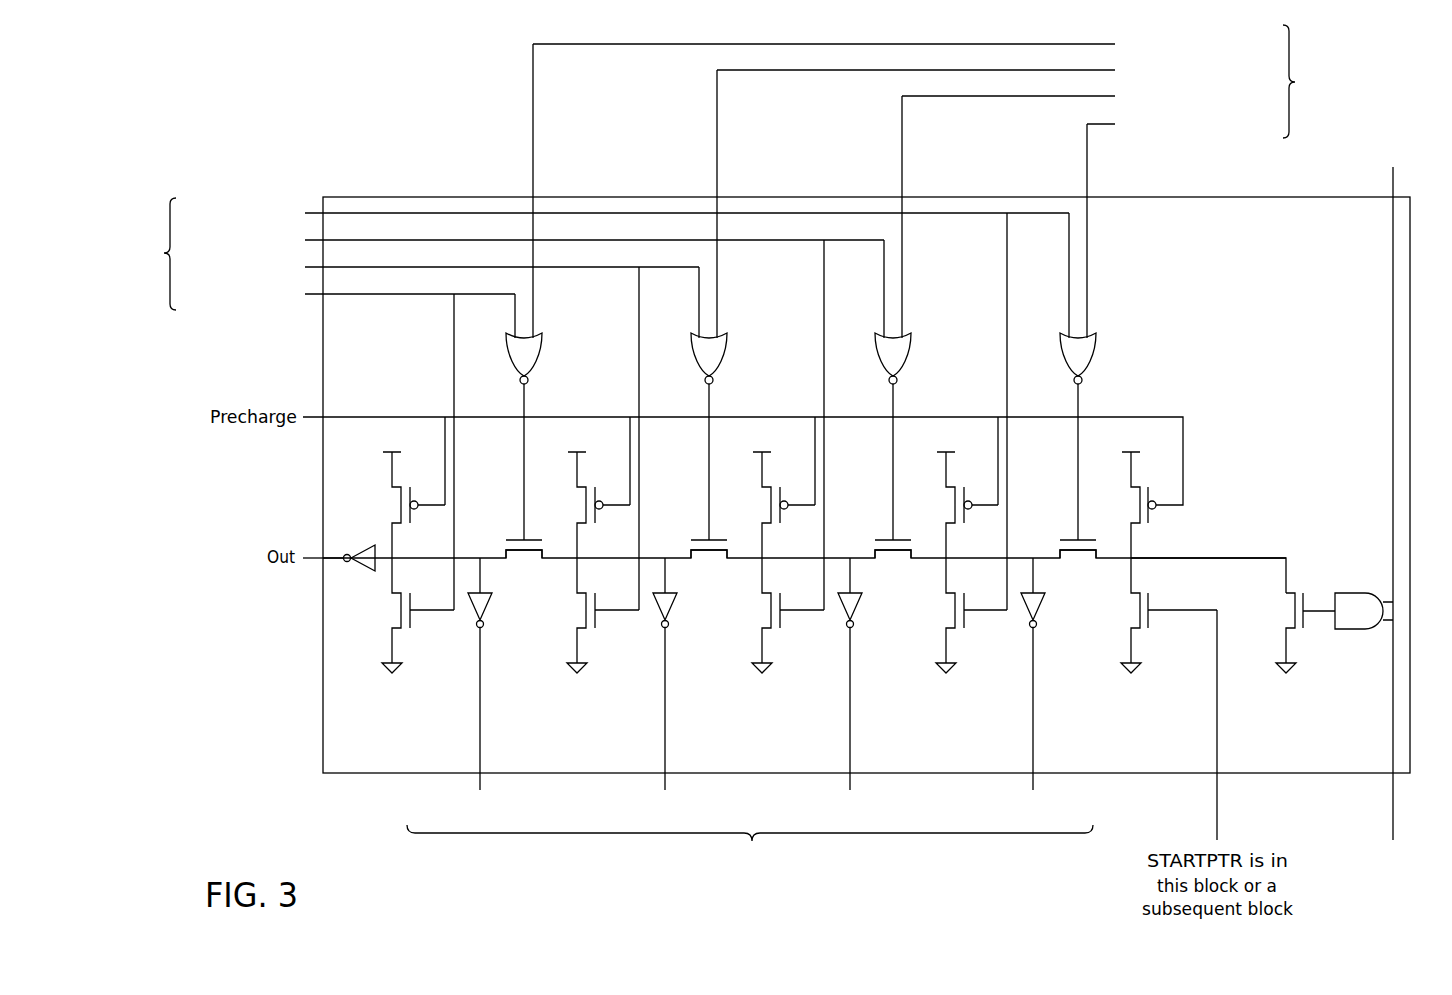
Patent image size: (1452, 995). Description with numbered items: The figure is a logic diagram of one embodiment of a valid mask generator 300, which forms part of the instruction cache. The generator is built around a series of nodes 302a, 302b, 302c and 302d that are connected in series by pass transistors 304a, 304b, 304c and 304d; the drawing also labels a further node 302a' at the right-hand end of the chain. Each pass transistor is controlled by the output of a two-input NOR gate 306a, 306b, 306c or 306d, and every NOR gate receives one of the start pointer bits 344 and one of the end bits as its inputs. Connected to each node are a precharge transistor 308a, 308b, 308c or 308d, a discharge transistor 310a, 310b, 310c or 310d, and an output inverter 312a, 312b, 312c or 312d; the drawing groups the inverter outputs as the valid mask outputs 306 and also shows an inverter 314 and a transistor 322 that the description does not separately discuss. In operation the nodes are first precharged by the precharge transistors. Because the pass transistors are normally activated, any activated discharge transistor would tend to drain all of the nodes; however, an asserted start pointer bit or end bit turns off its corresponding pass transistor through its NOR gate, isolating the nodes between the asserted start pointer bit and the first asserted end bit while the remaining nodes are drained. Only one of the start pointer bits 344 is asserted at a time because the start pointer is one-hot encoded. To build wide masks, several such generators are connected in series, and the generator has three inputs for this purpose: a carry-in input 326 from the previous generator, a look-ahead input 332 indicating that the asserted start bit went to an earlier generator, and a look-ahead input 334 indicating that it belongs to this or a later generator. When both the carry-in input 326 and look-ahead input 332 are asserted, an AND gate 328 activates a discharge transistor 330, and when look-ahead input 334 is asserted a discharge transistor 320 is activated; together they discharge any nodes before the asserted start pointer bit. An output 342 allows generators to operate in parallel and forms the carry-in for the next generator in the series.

The valid mask generator 300 is at (1310, 229).
The node 302a is at (1054, 467).
The pass transistor 302a' is at (1208, 544).
The node 302b is at (870, 467).
The node 302c is at (686, 467).
The node 302d is at (501, 467).
The pass transistor 304a is at (1079, 568).
The pass transistor 304b is at (895, 568).
The pass transistor 304c is at (710, 568).
The pass transistor 304d is at (526, 568).
The VMASK output signals 306 is at (750, 837).
The two-input NOR gate 306a is at (1103, 358).
The two-input NOR gate 306b is at (919, 358).
The two-input NOR gate 306c is at (734, 358).
The two-input NOR gate 306d is at (550, 358).
The precharge transistor 308a is at (967, 505).
The precharge transistor 308b is at (784, 505).
The precharge transistor 308c is at (599, 505).
The precharge transistor 308d is at (414, 505).
The discharge transistor 310a is at (975, 615).
The discharge transistor 310b is at (791, 615).
The discharge transistor 310c is at (605, 615).
The discharge transistor 310d is at (421, 615).
The output inverter 312a is at (1053, 674).
The output inverter 312b is at (870, 674).
The output inverter 312c is at (684, 674).
The output inverter 312d is at (500, 674).
The output inverter 314 is at (360, 547).
The discharge transistor 320 is at (1169, 615).
The PMOS precharge transistor 322 is at (1148, 505).
The carry-in input 326 is at (1390, 795).
The AND gate 328 is at (1364, 599).
The discharge transistor 330 is at (1305, 621).
The look-ahead input 332 is at (1393, 184).
The look-ahead input 334 is at (1215, 798).
The output 342 is at (310, 562).
The start pointer bits 344 is at (729, 167).